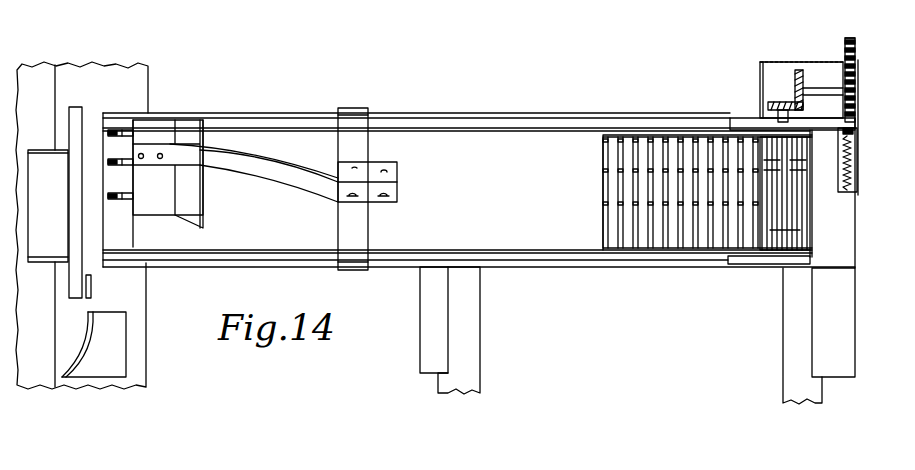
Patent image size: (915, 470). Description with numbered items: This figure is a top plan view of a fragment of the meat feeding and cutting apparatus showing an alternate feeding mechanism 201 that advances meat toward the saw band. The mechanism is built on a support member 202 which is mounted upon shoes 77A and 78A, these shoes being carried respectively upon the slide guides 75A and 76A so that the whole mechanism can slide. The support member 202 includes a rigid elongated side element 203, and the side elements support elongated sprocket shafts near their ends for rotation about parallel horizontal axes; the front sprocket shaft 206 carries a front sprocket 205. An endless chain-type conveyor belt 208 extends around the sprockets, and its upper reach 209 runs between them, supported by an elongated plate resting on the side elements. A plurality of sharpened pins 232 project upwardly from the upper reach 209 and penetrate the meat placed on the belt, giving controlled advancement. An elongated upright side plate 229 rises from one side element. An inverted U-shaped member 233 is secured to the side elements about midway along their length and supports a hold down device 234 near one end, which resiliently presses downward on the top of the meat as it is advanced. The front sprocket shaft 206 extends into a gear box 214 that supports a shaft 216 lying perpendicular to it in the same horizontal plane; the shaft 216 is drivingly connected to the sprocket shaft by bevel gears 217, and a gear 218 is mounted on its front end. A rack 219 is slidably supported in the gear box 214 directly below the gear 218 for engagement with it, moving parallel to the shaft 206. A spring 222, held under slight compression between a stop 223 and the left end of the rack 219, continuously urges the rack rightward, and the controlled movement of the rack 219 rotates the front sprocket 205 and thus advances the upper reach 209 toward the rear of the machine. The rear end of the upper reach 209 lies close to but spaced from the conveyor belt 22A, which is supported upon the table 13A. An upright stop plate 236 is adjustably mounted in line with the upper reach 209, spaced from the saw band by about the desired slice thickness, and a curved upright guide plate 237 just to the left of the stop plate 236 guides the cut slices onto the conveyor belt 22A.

The conveyor belt 22A is at (45, 73).
The stop plate 236 is at (77, 138).
The table 13A is at (133, 310).
The curved upright guide plate 237 is at (72, 356).
The alternate feeding mechanism 201 is at (549, 90).
The upright side plate 229 is at (477, 117).
The side element 203 is at (557, 262).
The support member 202 is at (589, 266).
The front sprocket 205 is at (786, 248).
The hold down device 234 is at (205, 148).
The inverted U-shaped member 233 is at (348, 138).
The upper reach 209 is at (603, 227).
The conveyor belt 208 is at (604, 185).
The sharpened pins 232 is at (632, 203).
The gear box 214 is at (762, 72).
The bevel gears 217 is at (794, 93).
The shaft 216 is at (823, 90).
The front sprocket shaft 206 is at (780, 116).
The gear 218 is at (852, 85).
The rack 219 is at (847, 40).
The spring 222 is at (843, 182).
The stop 223 is at (855, 193).
The shoe 78A is at (425, 320).
The slide guide 76A is at (468, 308).
The shoe 77A is at (822, 328).
The slide guide 75A is at (788, 360).